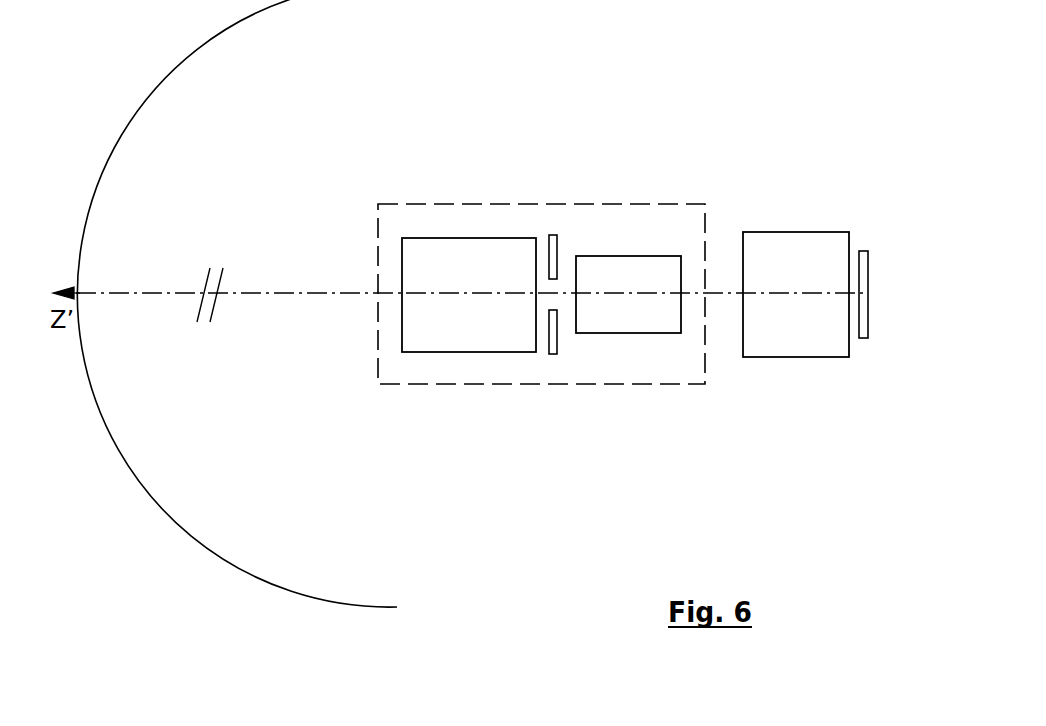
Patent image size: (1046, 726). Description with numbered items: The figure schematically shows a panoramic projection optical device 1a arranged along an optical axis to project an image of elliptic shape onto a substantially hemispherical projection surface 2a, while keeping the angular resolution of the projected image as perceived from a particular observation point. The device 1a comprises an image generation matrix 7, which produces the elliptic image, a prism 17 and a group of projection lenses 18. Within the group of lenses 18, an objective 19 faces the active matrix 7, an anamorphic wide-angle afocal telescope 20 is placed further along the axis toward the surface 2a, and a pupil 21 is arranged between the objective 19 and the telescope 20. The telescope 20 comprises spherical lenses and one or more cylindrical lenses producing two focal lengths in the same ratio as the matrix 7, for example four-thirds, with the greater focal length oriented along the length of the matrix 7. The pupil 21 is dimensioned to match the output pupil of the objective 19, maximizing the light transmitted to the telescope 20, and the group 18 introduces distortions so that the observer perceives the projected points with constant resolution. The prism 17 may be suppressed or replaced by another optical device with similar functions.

The panoramic projection optical device 1a is at (725, 80).
The projection surface 2a is at (147, 485).
The image generation matrix 7 is at (864, 250).
The prism 17 is at (747, 231).
The group of projection lenses 18 is at (683, 205).
The objective 19 is at (667, 333).
The anamorphic wide-angle afocal telescope 20 is at (500, 352).
The pupil 21 is at (552, 235).